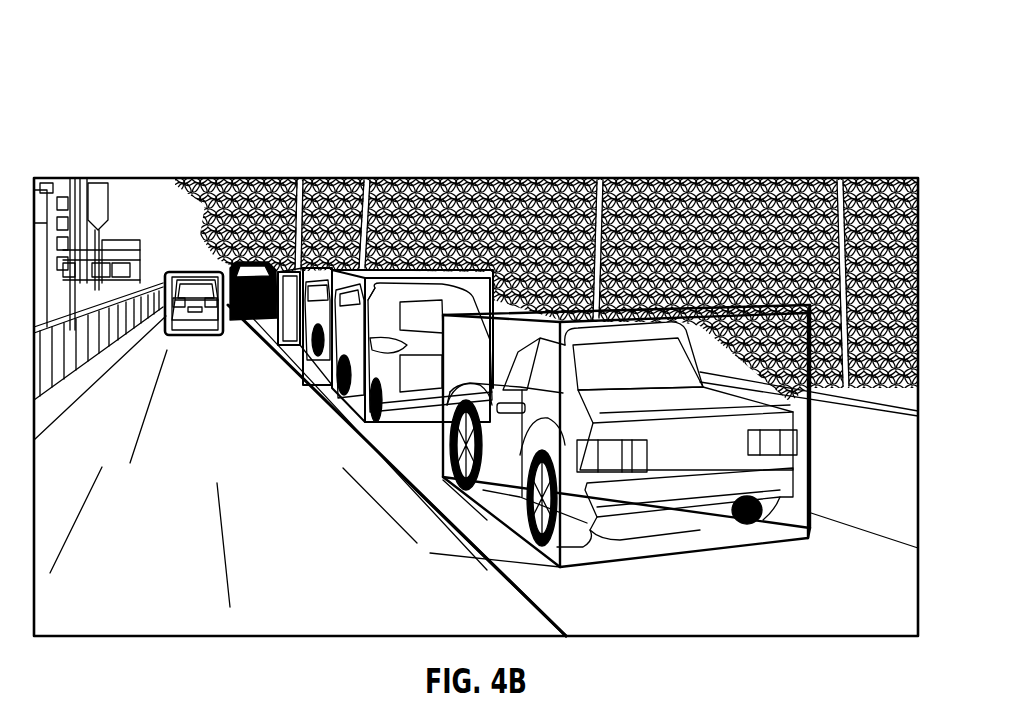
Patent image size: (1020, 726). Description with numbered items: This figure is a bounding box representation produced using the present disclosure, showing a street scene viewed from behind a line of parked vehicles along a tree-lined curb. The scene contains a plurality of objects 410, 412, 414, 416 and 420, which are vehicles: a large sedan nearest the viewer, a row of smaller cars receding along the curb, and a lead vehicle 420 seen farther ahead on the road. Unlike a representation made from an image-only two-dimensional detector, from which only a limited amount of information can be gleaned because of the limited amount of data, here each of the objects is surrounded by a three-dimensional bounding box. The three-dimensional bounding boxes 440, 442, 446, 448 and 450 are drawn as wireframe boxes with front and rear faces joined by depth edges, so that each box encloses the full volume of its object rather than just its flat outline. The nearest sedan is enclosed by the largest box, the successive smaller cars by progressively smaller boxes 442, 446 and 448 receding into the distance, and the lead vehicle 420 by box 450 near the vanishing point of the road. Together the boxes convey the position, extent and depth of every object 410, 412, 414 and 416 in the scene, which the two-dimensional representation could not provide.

The object 410 is at (783, 405).
The object 412 is at (457, 307).
The object 414 is at (345, 297).
The object 416 is at (312, 317).
The object 420 is at (197, 288).
The three-dimensional bounding box 440 is at (470, 543).
The three-dimensional bounding box 442 is at (352, 413).
The three-dimensional bounding box 446 is at (320, 372).
The three-dimensional bounding box 448 is at (292, 344).
The three-dimensional bounding box 450 is at (205, 335).